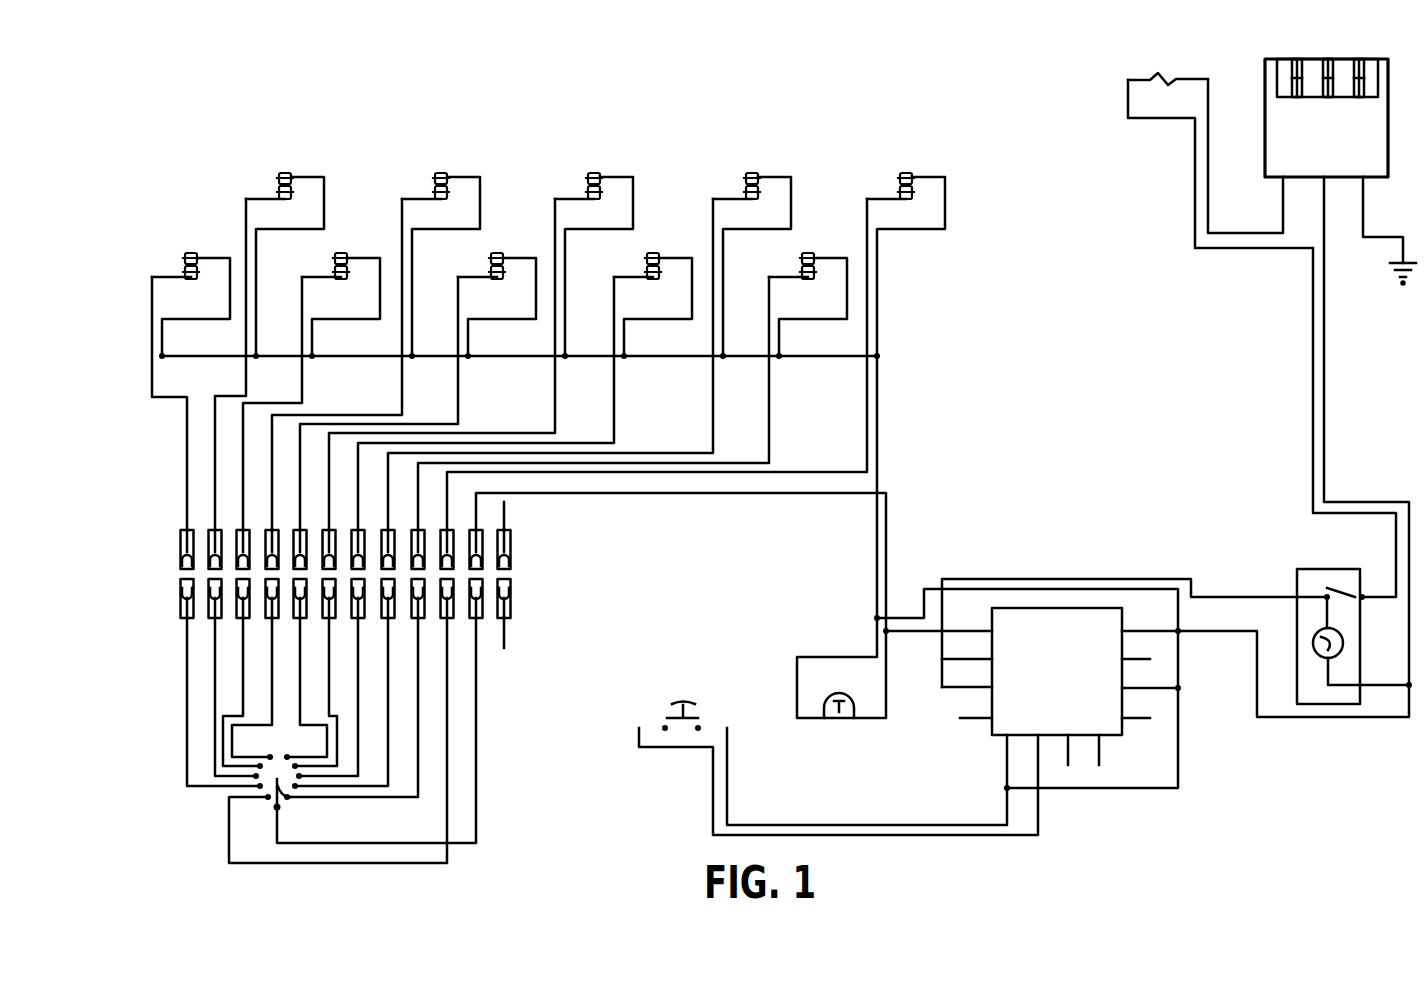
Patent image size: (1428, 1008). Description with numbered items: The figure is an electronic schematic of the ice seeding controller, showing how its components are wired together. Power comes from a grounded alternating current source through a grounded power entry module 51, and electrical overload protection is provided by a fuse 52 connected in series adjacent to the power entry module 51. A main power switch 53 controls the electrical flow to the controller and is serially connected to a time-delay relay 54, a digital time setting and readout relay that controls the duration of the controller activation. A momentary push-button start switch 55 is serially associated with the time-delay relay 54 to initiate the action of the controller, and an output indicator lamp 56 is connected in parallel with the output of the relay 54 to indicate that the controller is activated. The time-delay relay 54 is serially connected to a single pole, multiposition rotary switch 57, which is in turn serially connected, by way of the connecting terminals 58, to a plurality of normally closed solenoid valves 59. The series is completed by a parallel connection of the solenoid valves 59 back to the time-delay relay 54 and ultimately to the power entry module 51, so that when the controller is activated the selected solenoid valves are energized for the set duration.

The power entry module 51 is at (1303, 151).
The fuse 52 is at (1168, 58).
The main power switch 53 is at (1353, 636).
The time-delay relay 54 is at (1038, 690).
The start button 55 is at (681, 700).
The output indicator lamp 56 is at (841, 668).
The single pole, multi position rotary switch 57 is at (277, 769).
The connecting terminals 58 is at (319, 574).
The normally closed solenoid valves 59 is at (548, 243).